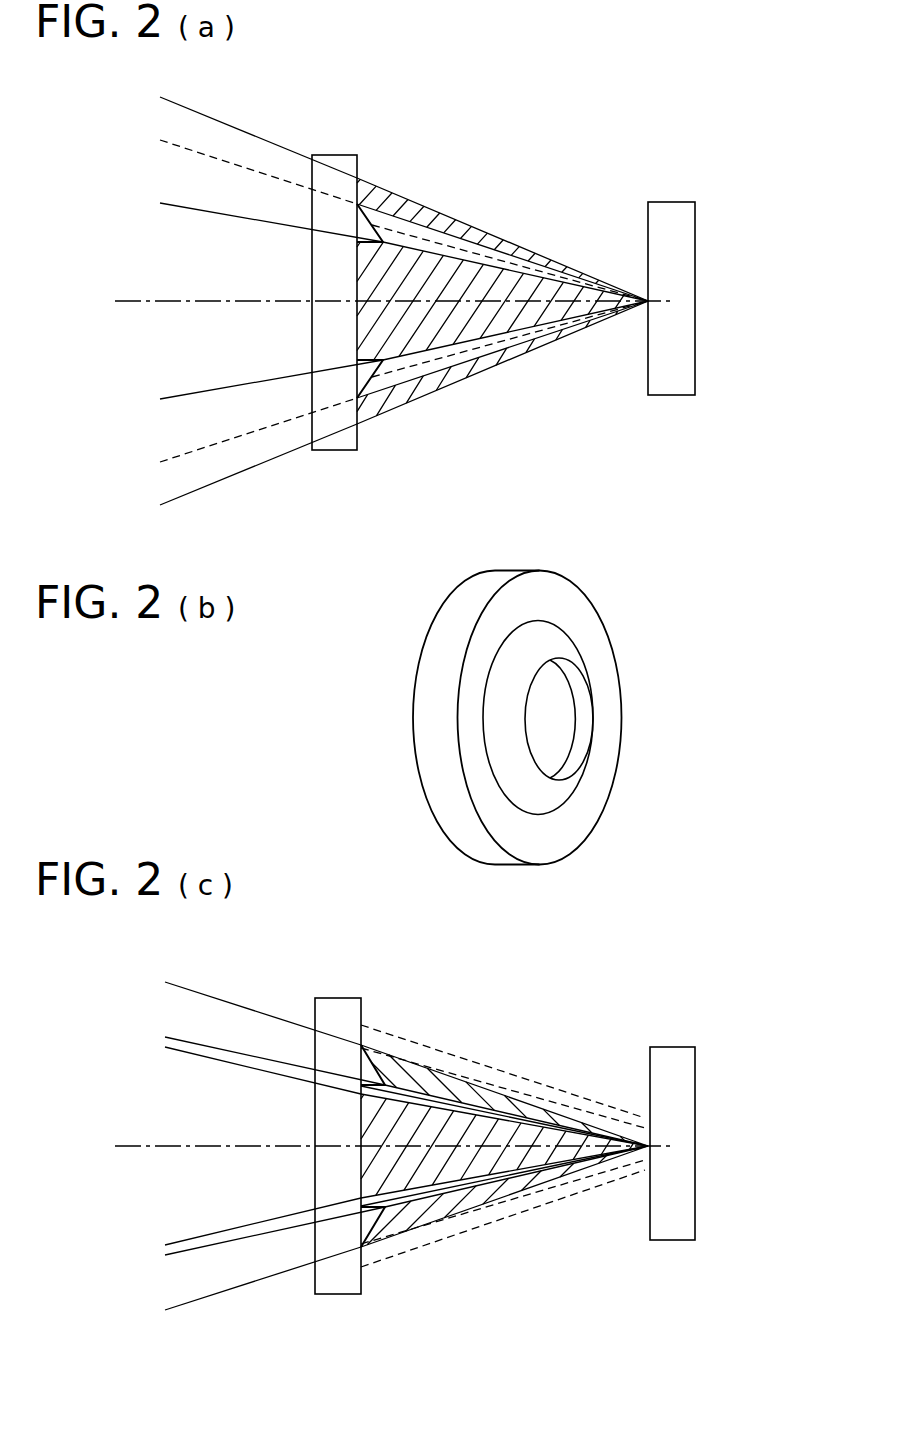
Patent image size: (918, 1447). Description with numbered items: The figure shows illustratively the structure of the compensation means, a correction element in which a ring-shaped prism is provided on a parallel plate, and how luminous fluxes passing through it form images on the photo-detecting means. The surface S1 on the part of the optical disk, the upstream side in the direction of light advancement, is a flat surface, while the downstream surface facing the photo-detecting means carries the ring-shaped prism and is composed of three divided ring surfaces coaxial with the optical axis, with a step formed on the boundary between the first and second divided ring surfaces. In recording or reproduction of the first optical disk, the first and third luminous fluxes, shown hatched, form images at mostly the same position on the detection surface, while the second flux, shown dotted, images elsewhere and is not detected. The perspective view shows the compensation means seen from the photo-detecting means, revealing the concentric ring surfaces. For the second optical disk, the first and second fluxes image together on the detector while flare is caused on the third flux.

The surface on the part of an optical disk S1 is at (311, 268).